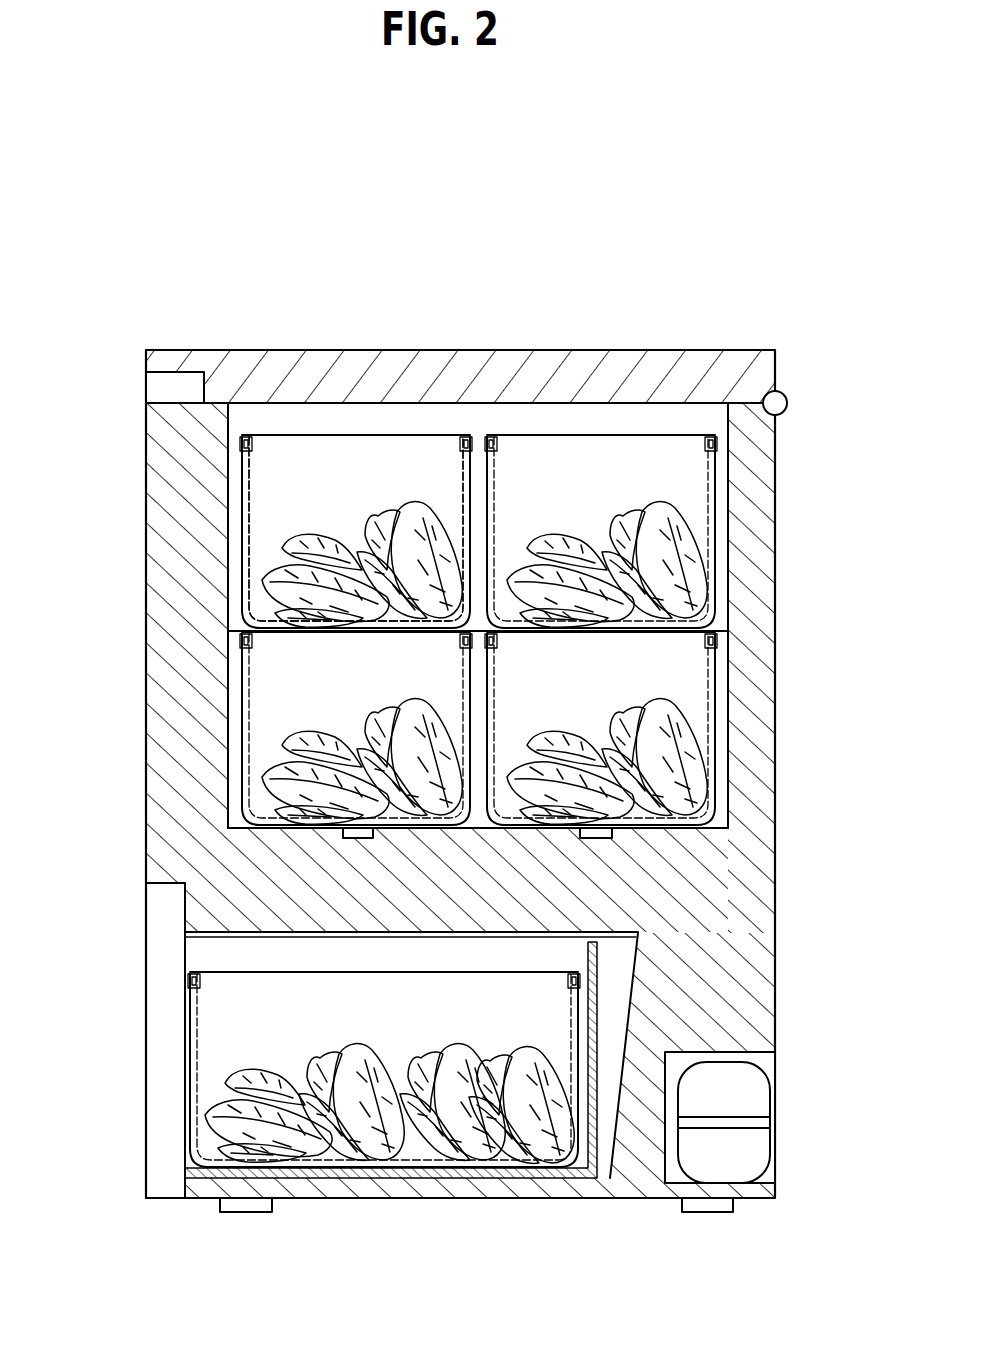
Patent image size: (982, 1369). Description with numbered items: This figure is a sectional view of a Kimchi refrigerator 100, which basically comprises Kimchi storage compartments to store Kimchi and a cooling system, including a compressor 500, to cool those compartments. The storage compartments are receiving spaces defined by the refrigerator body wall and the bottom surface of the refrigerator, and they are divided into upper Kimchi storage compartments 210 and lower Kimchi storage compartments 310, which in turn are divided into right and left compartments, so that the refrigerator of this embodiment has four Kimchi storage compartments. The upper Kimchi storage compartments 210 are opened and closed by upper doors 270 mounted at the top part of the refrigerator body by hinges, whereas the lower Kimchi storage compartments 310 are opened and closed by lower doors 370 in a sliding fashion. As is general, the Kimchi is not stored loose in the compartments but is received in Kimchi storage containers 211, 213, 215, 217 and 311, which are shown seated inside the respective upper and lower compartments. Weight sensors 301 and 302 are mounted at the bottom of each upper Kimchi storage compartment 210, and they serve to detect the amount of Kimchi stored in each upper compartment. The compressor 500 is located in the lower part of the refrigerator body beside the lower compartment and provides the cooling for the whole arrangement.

The Kimchi refrigerator 100 is at (192, 200).
The upper door 270 is at (697, 366).
The upper Kimchi storage compartment 210 is at (237, 518).
The Kimchi storage container 211 is at (247, 572).
The Kimchi storage container 213 is at (710, 527).
The Kimchi storage container 215 is at (247, 722).
The Kimchi storage container 217 is at (710, 722).
The weight sensor 301 is at (598, 842).
The weight sensor 302 is at (357, 843).
The lower Kimchi storage compartment 310 is at (230, 957).
The Kimchi storage container 311 is at (195, 1020).
The lower door 370 is at (160, 1092).
The compressor 500 is at (750, 1085).